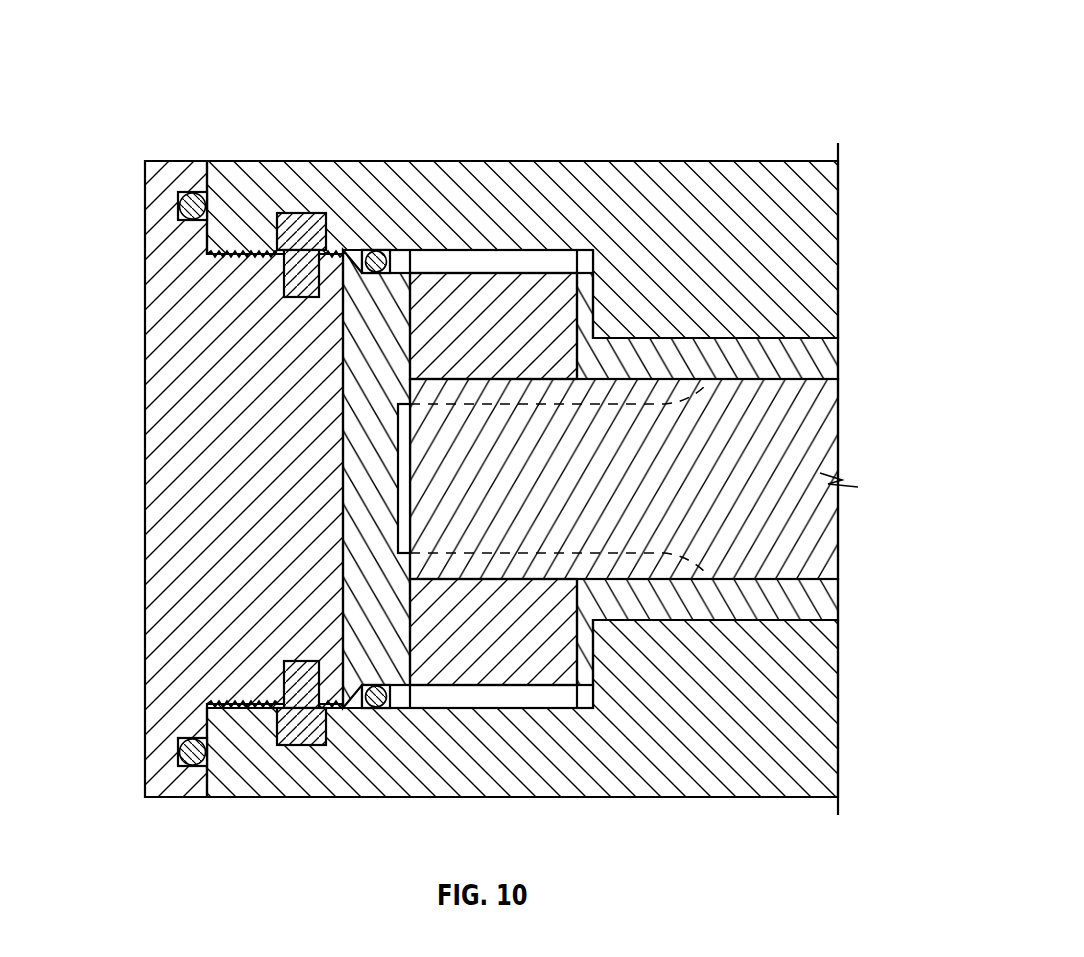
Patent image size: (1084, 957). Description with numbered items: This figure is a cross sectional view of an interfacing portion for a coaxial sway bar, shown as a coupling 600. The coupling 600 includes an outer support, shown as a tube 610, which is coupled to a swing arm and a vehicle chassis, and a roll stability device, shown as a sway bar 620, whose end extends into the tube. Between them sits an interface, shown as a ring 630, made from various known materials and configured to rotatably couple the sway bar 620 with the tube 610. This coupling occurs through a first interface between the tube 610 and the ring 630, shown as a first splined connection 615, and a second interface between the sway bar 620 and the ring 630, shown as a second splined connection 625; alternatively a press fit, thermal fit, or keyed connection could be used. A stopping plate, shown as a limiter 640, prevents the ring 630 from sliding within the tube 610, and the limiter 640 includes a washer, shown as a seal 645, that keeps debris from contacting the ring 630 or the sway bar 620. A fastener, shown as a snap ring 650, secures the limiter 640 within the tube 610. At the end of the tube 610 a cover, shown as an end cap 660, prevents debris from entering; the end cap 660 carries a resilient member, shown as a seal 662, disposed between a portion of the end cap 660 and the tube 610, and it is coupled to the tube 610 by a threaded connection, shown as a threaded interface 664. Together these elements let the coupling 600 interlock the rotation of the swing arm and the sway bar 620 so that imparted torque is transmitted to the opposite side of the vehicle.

The coupling 600 is at (158, 58).
The tube 610 is at (617, 185).
The first splined connection 615 is at (540, 700).
The sway bar 620 is at (818, 417).
The second splined connection 625 is at (592, 404).
The ring 630 is at (497, 292).
The limiter 640 is at (402, 318).
The seal 645 is at (380, 244).
The snap ring 650 is at (315, 243).
The end cap 660 is at (162, 283).
The seal 662 is at (180, 193).
The threaded interface 664 is at (247, 255).